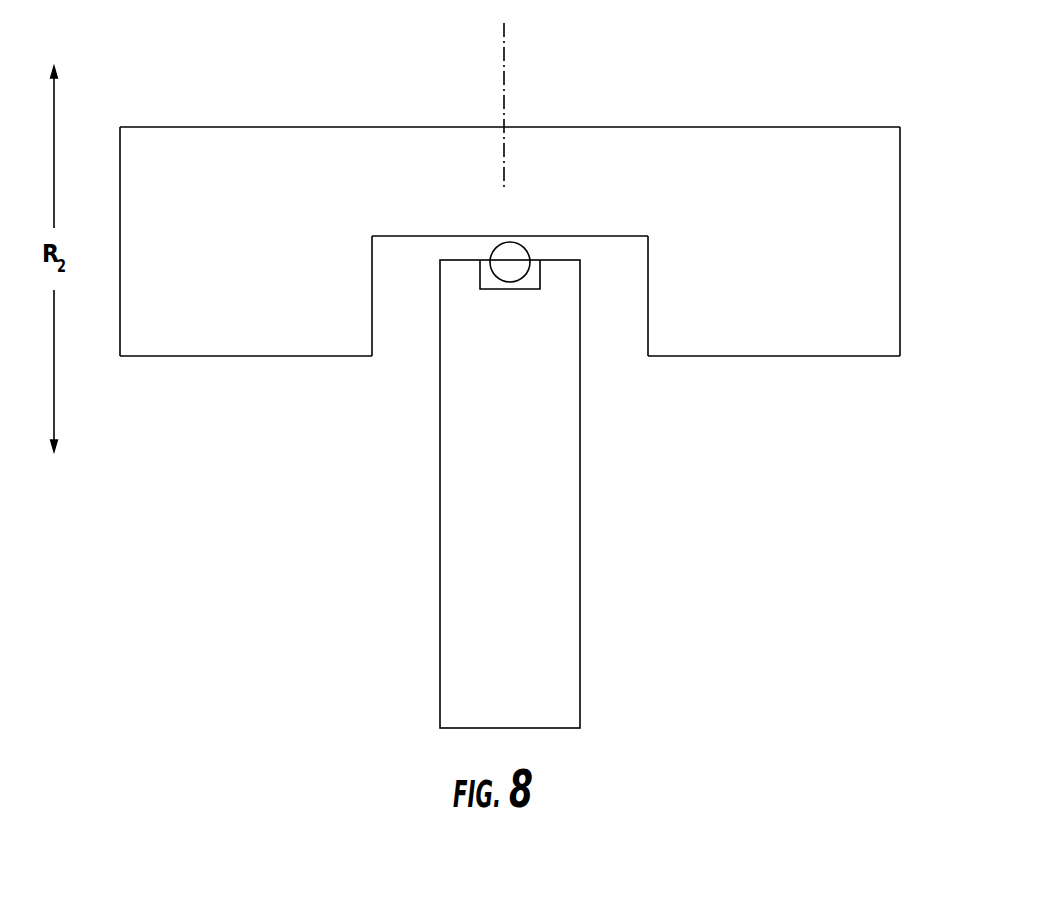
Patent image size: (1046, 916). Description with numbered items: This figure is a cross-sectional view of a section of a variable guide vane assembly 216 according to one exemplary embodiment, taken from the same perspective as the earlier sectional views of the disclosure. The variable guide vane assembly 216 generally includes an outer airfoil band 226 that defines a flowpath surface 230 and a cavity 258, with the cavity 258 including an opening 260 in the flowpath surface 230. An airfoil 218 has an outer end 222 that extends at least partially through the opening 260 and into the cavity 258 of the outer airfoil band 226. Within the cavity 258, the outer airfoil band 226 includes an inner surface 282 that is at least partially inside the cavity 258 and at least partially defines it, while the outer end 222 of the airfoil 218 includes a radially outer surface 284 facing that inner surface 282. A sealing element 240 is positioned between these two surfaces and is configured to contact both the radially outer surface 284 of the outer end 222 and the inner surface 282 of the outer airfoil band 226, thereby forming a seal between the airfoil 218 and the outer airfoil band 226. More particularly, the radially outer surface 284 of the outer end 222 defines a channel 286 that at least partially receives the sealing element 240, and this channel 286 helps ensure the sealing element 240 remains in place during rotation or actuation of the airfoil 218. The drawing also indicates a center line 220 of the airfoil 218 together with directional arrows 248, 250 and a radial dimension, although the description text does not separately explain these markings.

The variable guide vane assembly 216 is at (539, 225).
The airfoil 218 is at (555, 531).
The central axis 220 is at (504, 62).
The outer end 222 is at (488, 402).
The outer airfoil band 226 is at (876, 250).
The flowpath surface 230 is at (203, 360).
The sealing element 240 is at (512, 257).
The direction 248 is at (664, 632).
The direction 250 is at (381, 620).
The cavity 258 is at (612, 266).
The opening 260 is at (615, 362).
The inner surface 282 is at (418, 246).
The radially outer surface 284 is at (465, 250).
The channel 286 is at (482, 281).